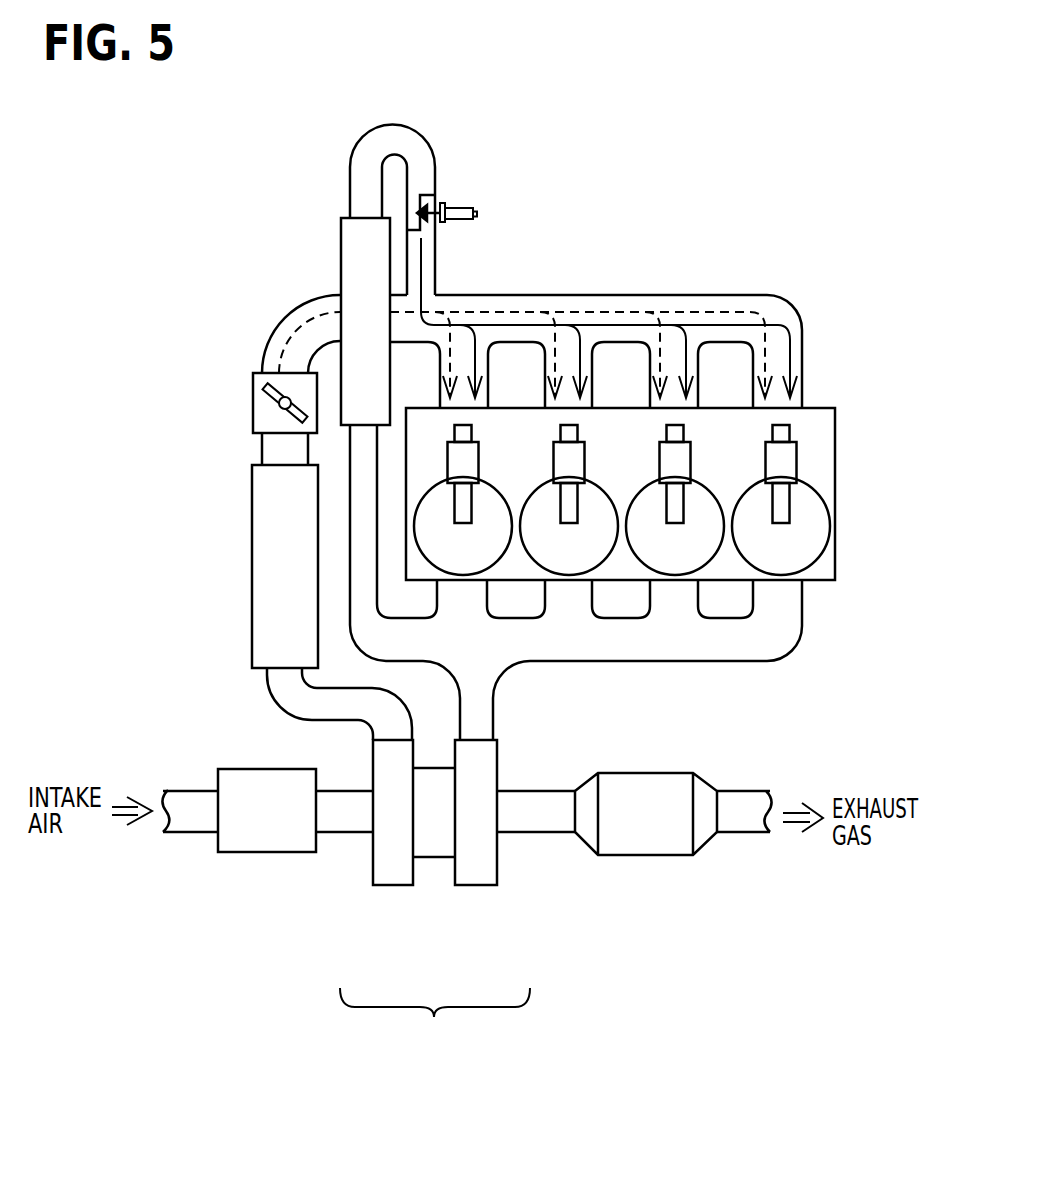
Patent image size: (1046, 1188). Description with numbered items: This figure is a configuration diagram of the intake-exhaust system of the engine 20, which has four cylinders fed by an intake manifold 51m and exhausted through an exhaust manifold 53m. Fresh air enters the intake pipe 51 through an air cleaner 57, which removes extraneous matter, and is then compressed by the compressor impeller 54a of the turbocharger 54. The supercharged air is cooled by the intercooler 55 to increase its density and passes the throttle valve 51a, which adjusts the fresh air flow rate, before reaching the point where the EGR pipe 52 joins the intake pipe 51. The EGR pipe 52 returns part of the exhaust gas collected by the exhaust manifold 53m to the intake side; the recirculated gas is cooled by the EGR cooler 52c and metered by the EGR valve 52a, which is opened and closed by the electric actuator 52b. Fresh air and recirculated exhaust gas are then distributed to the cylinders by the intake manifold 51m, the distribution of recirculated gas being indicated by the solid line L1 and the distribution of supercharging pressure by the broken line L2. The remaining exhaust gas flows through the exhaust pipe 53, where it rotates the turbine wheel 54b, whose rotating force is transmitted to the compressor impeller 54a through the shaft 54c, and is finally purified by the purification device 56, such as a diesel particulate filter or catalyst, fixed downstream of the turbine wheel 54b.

The engine 20 is at (835, 483).
The intake pipe 51 is at (285, 318).
The throttle valve 51a is at (262, 407).
The intake manifold 51m is at (600, 295).
The EGR pipe 52 is at (363, 133).
The EGR valve 52a is at (412, 203).
The electric actuator 52b is at (460, 207).
The EGR cooler 52c is at (340, 262).
The exhaust pipe 53 is at (494, 717).
The exhaust manifold 53m is at (648, 662).
The turbocharger 54 is at (435, 1023).
The compressor impeller 54a is at (382, 860).
The turbine wheel 54b is at (487, 862).
The shaft 54c is at (433, 835).
The intercooler 55 is at (252, 574).
The purification device 56 is at (648, 855).
The air cleaner 57 is at (268, 853).
The solid line L1 is at (800, 322).
The broken line L2 is at (714, 308).